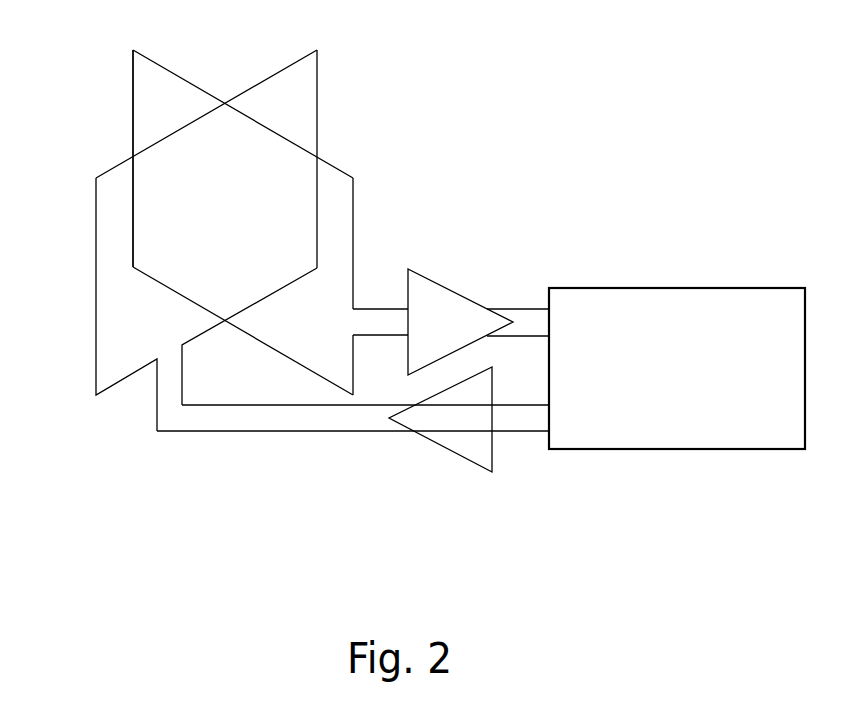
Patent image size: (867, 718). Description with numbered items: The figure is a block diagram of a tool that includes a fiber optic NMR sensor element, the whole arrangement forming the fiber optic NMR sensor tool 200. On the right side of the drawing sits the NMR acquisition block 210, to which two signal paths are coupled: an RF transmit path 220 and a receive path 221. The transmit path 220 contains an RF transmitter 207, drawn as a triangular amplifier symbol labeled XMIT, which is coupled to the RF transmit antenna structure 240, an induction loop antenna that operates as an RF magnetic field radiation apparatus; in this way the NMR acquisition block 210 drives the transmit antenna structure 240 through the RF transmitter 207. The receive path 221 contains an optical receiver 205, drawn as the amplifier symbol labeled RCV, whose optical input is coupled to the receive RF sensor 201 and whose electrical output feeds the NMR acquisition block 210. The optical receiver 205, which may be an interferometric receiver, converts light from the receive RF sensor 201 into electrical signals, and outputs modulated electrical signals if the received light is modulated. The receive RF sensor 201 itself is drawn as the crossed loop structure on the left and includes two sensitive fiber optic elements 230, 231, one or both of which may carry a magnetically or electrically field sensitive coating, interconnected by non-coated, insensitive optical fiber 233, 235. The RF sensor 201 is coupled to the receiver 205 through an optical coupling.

The fiber optic NMR sensor tool 200 is at (592, 60).
The receive RF sensor 201 is at (343, 155).
The optical receiver 205 is at (458, 290).
The RF transmitter 207 is at (445, 448).
The NMR acquisition block 210 is at (675, 288).
The RF transmit path 220 is at (252, 452).
The receive path 221 is at (396, 270).
The fiber optic element 230 is at (353, 210).
The fiber optic element 231 is at (133, 103).
The non-coated optical fiber 233 is at (167, 68).
The non-coated optical fiber 235 is at (163, 287).
The RF transmit antenna structure 240 is at (332, 70).